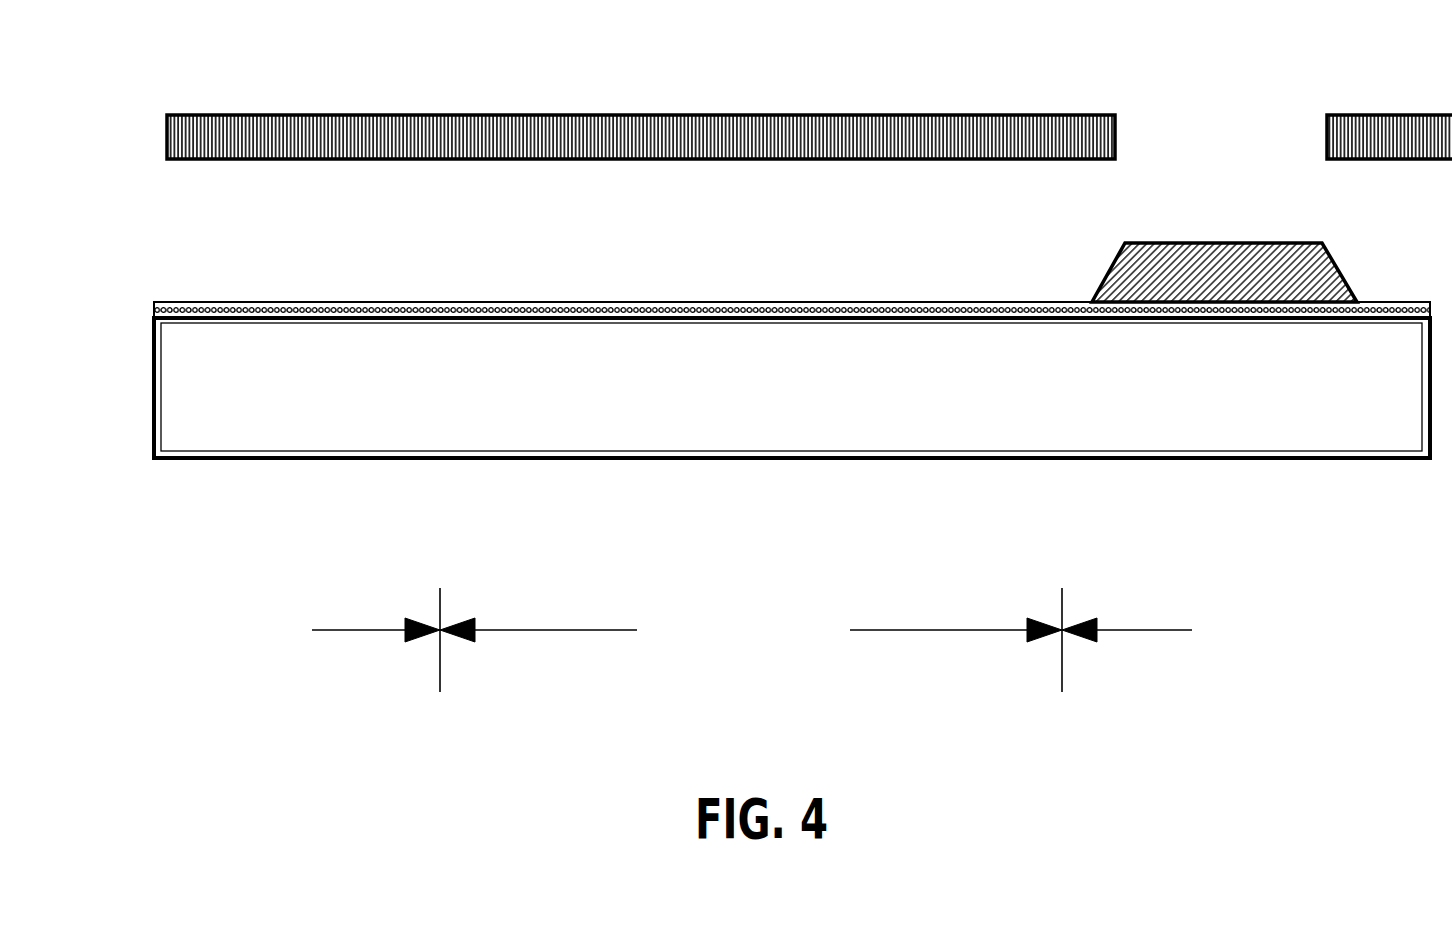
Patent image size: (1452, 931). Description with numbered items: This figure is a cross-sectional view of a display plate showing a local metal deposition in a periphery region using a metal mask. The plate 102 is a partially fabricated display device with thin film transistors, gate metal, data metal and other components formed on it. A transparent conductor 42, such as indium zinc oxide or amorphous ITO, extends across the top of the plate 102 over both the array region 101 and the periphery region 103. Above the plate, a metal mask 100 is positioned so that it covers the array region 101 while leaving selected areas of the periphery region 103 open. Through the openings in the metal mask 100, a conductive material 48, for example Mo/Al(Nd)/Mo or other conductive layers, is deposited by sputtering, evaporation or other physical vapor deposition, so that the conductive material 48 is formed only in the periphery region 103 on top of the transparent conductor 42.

The metal mask 100 is at (1105, 113).
The plate 102 is at (1092, 441).
The transparent conductor 42 is at (305, 300).
The conductive material 48 is at (1335, 258).
The array region 101 is at (751, 631).
The periphery region 103 is at (753, 640).